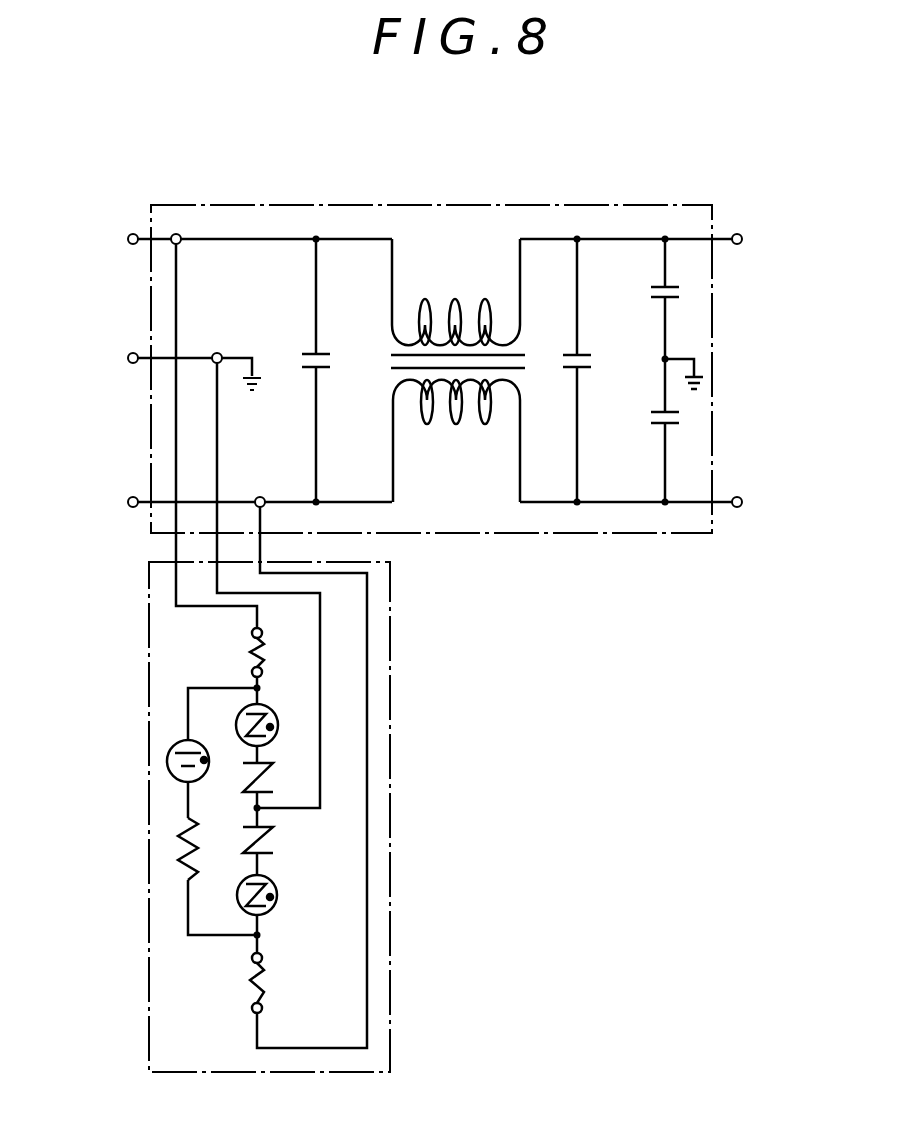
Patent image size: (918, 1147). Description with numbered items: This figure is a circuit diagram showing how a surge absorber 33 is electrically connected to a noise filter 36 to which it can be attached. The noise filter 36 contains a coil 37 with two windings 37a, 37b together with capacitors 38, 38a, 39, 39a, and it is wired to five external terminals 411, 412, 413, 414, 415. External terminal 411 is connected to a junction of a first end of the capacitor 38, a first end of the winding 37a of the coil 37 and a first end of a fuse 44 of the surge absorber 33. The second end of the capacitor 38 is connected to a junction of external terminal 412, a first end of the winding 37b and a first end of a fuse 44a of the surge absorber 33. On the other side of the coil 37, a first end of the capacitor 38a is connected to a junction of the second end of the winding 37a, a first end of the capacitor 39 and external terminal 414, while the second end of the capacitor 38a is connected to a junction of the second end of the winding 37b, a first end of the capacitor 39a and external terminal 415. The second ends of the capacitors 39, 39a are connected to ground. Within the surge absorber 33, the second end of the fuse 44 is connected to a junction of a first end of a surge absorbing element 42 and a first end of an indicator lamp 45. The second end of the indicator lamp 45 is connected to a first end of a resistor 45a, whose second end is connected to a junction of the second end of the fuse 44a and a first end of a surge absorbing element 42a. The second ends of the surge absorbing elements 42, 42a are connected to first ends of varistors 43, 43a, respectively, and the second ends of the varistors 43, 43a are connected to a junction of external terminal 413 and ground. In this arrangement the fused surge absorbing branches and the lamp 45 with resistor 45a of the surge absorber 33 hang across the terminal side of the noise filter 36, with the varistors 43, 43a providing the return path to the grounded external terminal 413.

The surge absorber 33 is at (390, 618).
The noise filter 36 is at (250, 203).
The coil 37 is at (458, 324).
The winding 37a is at (425, 299).
The winding 37b is at (450, 433).
The capacitor 38 is at (339, 356).
The capacitor 38a is at (592, 358).
The capacitor 39 is at (690, 290).
The capacitor 39a is at (690, 417).
The external terminal 411 is at (127, 240).
The external terminal 412 is at (127, 502).
The external terminal 413 is at (127, 357).
The external terminal 414 is at (743, 239).
The external terminal 415 is at (743, 502).
The surge absorbing element 42 is at (278, 728).
The surge absorbing element 42a is at (277, 895).
The varistor 43 is at (278, 780).
The varistor 43a is at (278, 840).
The fuse 44 is at (252, 648).
The fuse 44a is at (250, 980).
The indicator lamp 45 is at (166, 762).
The resistor 45a is at (178, 862).